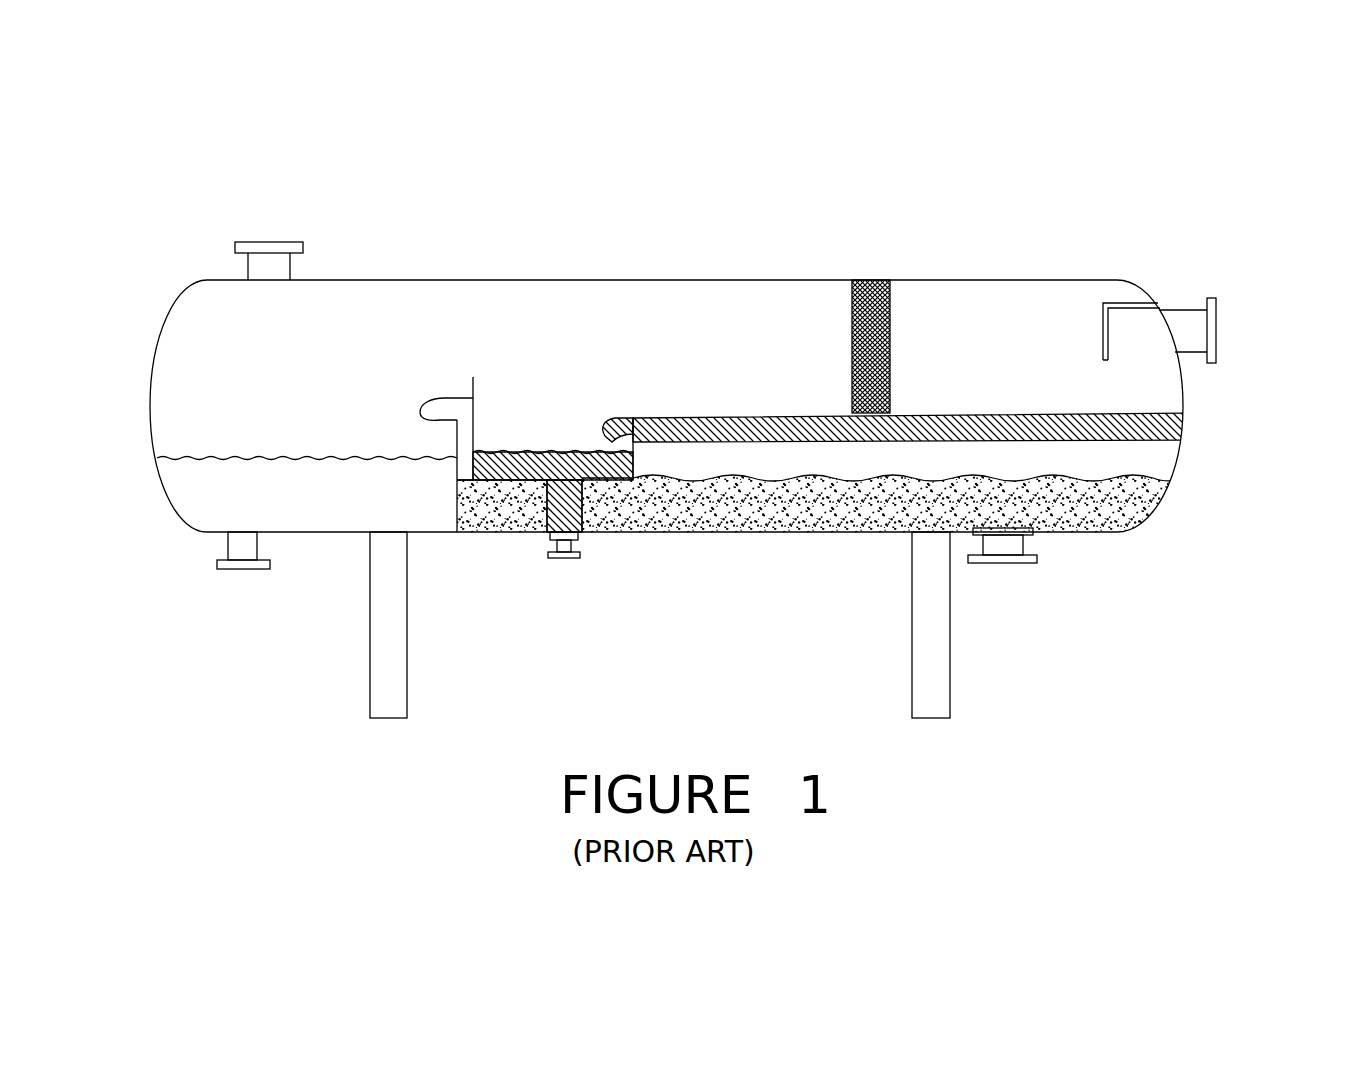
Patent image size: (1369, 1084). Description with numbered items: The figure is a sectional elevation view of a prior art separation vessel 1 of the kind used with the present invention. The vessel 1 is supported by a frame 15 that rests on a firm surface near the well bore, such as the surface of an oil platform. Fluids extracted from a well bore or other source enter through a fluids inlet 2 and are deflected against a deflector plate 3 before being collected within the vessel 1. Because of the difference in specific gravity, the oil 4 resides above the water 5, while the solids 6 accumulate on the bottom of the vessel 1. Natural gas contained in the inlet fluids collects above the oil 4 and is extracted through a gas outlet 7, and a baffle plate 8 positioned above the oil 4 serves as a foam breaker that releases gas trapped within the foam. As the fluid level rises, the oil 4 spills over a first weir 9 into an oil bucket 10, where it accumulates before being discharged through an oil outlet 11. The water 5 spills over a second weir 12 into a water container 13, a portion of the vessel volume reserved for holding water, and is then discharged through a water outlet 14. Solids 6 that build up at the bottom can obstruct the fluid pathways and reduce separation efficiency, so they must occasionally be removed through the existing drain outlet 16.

The separation vessel 1 is at (683, 240).
The fluids inlet 2 is at (1217, 318).
The deflector plate 3 is at (1117, 303).
The oil 4 is at (1183, 427).
The water 5 is at (1140, 457).
The solids 6 is at (1110, 517).
The gas outlet 7 is at (272, 242).
The baffle plate 8 is at (870, 283).
The first weir 9 is at (650, 445).
The oil bucket 10 is at (473, 377).
The oil outlet 11 is at (572, 560).
The second weir 12 is at (457, 444).
The water container 13 is at (215, 492).
The water outlet 14 is at (250, 570).
The frame 15 is at (935, 632).
The drain outlet 16 is at (1020, 567).